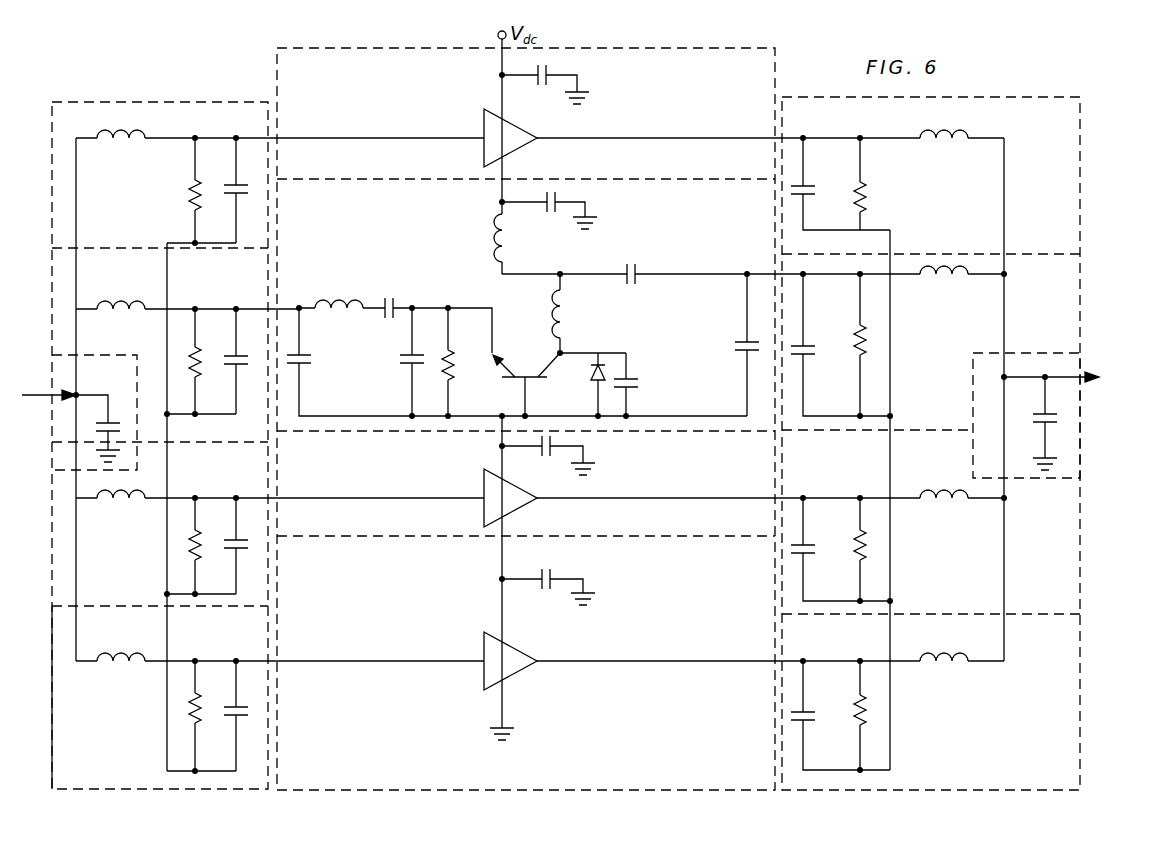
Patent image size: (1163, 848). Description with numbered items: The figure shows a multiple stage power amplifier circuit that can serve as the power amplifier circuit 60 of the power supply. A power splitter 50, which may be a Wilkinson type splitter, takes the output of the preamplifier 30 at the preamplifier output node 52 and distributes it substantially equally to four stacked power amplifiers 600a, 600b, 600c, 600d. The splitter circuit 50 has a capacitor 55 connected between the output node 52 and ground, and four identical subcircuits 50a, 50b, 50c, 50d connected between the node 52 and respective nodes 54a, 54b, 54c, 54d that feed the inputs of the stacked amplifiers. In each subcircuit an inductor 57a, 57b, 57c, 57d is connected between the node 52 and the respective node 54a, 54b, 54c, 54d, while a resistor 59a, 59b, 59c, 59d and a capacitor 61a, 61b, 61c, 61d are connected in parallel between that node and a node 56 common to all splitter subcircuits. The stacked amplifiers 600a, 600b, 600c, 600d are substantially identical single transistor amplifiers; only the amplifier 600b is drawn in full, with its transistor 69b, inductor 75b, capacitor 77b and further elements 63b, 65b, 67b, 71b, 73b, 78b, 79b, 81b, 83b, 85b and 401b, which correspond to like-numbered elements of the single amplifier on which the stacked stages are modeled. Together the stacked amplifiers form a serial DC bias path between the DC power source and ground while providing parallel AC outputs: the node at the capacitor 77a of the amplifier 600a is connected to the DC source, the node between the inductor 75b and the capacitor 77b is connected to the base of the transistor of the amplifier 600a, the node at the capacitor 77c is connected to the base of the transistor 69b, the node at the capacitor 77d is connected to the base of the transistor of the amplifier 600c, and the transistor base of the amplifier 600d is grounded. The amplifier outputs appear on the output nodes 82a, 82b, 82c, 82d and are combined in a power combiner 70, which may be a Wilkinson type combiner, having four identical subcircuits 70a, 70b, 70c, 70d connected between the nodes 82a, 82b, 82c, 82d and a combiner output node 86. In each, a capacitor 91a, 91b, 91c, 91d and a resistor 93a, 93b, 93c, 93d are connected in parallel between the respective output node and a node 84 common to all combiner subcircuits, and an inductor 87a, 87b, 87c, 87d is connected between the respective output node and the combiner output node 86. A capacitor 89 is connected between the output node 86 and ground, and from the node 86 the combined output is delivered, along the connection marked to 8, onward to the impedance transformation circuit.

The power splitter 50 is at (207, 102).
The splitter subcircuit 50a is at (52, 188).
The splitter subcircuit 50b is at (52, 290).
The splitter subcircuit 50c is at (52, 538).
The splitter subcircuit 50d is at (52, 686).
The preamplifier output node 52 is at (76, 395).
The capacitor 55 is at (112, 448).
The common node 56 is at (182, 242).
The inductor 57a is at (104, 134).
The inductor 57b is at (120, 300).
The inductor 57c is at (120, 502).
The inductor 57d is at (133, 658).
The resistor 59a is at (195, 186).
The resistor 59b is at (195, 349).
The resistor 59c is at (193, 545).
The resistor 59d is at (193, 702).
The node 54a is at (196, 138).
The node 54b is at (236, 308).
The node 54c is at (236, 498).
The node 54d is at (236, 660).
The capacitor 61a is at (248, 186).
The capacitor 61b is at (248, 362).
The capacitor 61c is at (248, 548).
The capacitor 61d is at (248, 714).
The preamplifier 30 is at (45, 378).
The power amplifier circuit 60 is at (783, 80).
The stacked power amplifier 600a is at (609, 123).
The stacked power amplifier 600b is at (517, 307).
The stacked power amplifier 600c is at (603, 483).
The stacked power amplifier 600d is at (604, 622).
The capacitor 77a is at (550, 72).
The capacitor 77b is at (556, 198).
The capacitor 77c is at (538, 455).
The capacitor 77d is at (552, 574).
The shunt capacitor 63b is at (306, 356).
The series inductor 65b is at (354, 300).
The coupling capacitor 67b is at (396, 298).
The shunt capacitor 71b is at (402, 372).
The bias resistor 73b is at (450, 370).
The transistor 69b is at (533, 384).
The inductor 75b is at (508, 236).
The collector node 78b is at (568, 274).
The output coupling capacitor 83b is at (642, 284).
The collector inductor 79b is at (568, 322).
The diode 401b is at (602, 362).
The bypass capacitor 81b is at (636, 388).
The output shunt capacitor 85b is at (738, 350).
The amplifier output node 82a is at (708, 140).
The amplifier output node 82b is at (676, 276).
The amplifier output node 82c is at (668, 500).
The amplifier output node 82d is at (668, 666).
The power combiner 70 is at (1086, 104).
The combiner subcircuit 70a is at (1046, 124).
The combiner subcircuit 70b is at (1046, 270).
The combiner subcircuit 70c is at (1045, 501).
The combiner subcircuit 70d is at (1046, 639).
The inductor 87a is at (944, 138).
The inductor 87b is at (939, 276).
The inductor 87c is at (948, 502).
The inductor 87d is at (952, 664).
The capacitor 91a is at (814, 184).
The capacitor 91b is at (812, 344).
The capacitor 91c is at (812, 544).
The capacitor 91d is at (812, 710).
The resistor 93a is at (862, 184).
The resistor 93b is at (856, 358).
The resistor 93c is at (854, 560).
The resistor 93d is at (854, 726).
The common node 84 is at (892, 376).
The combiner circuit output node 86 is at (1090, 364).
The capacitor 89 is at (1060, 424).
The load (to) 8 is at (1125, 378).